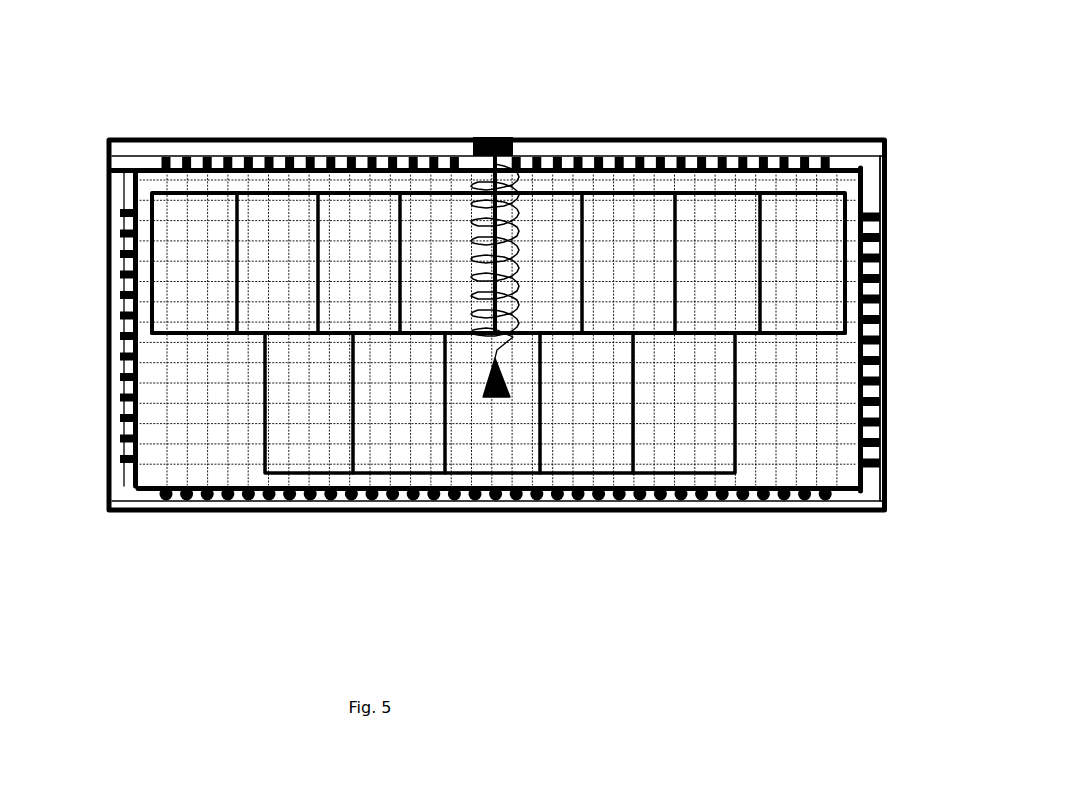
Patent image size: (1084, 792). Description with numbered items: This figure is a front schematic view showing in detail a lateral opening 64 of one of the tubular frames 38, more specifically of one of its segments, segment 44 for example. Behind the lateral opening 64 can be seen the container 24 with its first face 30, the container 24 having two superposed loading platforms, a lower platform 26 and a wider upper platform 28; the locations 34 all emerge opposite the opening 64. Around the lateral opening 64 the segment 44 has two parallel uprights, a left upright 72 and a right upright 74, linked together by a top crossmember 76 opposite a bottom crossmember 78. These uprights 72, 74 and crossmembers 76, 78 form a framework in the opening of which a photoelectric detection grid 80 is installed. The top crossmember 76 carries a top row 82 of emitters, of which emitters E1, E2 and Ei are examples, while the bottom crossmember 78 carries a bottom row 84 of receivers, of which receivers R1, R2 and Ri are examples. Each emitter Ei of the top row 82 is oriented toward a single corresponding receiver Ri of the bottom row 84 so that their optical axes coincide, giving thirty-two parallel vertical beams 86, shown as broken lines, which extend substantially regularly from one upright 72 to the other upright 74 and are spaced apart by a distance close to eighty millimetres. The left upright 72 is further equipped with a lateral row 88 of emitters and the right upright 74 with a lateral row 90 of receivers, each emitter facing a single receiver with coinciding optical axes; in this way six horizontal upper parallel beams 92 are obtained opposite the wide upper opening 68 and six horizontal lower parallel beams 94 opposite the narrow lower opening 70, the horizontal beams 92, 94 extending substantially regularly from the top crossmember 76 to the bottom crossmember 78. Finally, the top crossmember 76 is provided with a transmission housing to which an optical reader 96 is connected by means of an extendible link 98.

The tubular frame 38 is at (731, 88).
The segment 44 is at (141, 137).
The emitter E1 is at (165, 158).
The emitter E2 is at (187, 158).
The emitter Ei is at (307, 143).
The horizontal upper parallel beams 92 is at (277, 232).
The vertical parallel beams 86 is at (350, 227).
The top crossmember 76 is at (412, 147).
The container 24 is at (537, 190).
The extendible link 98 is at (515, 240).
The photoelectric detection grid 80 is at (617, 248).
The top row of emitters 82 is at (849, 163).
The lateral row of receivers 90 is at (880, 182).
The wide upper opening 68 is at (806, 268).
The right upright 74 is at (878, 345).
The horizontal lower parallel beams 94 is at (800, 422).
The bottom row of receivers 84 is at (851, 495).
The upper platform 28 is at (192, 330).
The left upright 72 is at (112, 335).
The narrow lower opening 70 is at (149, 414).
The lateral row of emitters 88 is at (128, 482).
The receiver R1 is at (163, 508).
The receiver R2 is at (185, 513).
The receiver Ri is at (273, 513).
The lower platform 26 is at (298, 473).
The first face 30 is at (420, 389).
The lateral opening 64 is at (585, 420).
The locations 34 is at (686, 424).
The bottom crossmember 78 is at (476, 500).
The optical reader 96 is at (510, 400).